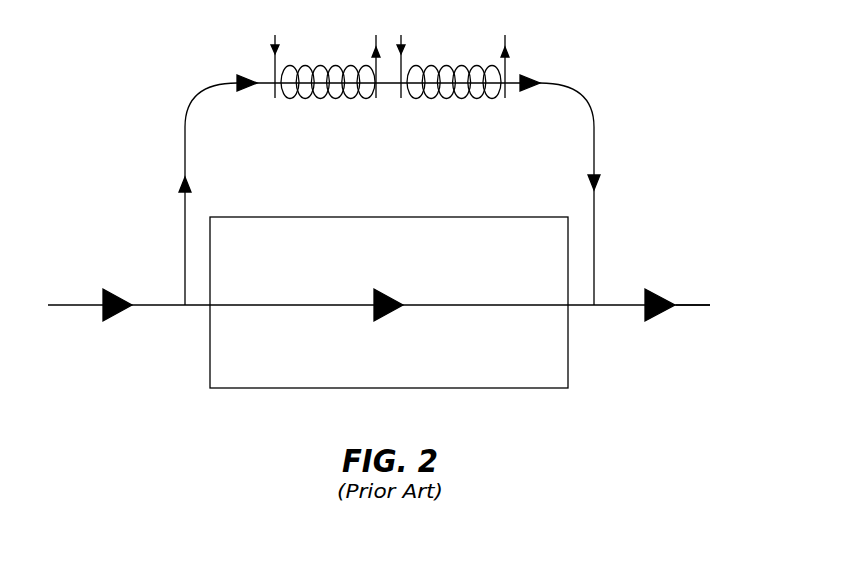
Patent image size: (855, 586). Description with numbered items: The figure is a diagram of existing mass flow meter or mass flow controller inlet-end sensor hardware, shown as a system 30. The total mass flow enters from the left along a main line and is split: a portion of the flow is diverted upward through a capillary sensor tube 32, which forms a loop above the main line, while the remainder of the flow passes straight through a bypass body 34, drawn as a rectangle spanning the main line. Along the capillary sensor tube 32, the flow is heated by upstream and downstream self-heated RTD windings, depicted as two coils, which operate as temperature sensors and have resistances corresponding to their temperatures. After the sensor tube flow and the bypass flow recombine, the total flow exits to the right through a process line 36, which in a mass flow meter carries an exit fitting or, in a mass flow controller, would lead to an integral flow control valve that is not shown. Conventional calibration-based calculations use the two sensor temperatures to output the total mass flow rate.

The system 30 is at (414, 234).
The capillary sensor tube 32 is at (594, 230).
The bypass body 34 is at (253, 388).
The process line 36 is at (690, 305).